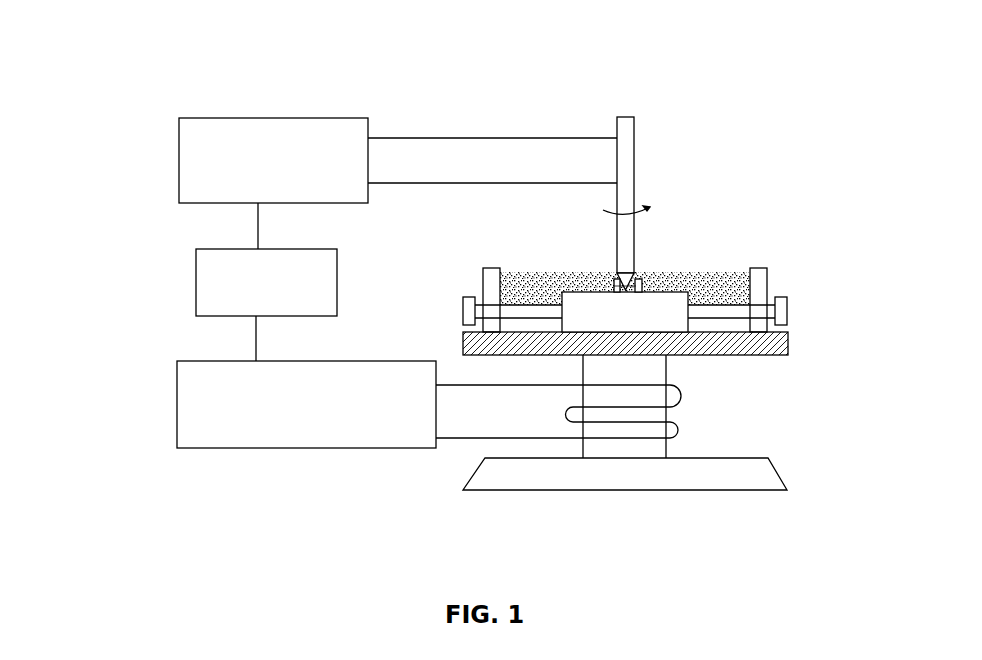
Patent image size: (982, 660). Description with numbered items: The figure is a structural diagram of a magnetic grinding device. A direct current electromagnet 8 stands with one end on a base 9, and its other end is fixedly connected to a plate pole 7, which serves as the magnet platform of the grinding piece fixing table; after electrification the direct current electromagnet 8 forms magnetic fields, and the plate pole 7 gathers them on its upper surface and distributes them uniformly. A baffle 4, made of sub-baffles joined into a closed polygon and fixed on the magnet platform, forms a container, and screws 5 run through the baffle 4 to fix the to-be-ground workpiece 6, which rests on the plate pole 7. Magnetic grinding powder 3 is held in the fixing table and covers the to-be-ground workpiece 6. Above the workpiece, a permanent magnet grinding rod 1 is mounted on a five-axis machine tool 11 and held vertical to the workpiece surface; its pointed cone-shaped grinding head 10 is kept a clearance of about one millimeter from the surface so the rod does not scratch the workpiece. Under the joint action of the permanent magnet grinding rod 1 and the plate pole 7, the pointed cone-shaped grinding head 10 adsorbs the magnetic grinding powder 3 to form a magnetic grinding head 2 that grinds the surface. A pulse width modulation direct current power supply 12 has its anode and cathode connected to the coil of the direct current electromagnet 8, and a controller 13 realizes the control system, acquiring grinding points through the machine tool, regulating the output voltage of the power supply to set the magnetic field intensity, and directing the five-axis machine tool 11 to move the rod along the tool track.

The permanent magnet grinding rod 1 is at (623, 148).
The magnetic grinding head 2 is at (628, 290).
The magnetic grinding powder 3 is at (739, 273).
The baffle 4 is at (760, 283).
The screws 5 is at (786, 313).
The to-be-ground workpiece 6 is at (678, 322).
The plate pole 7 is at (667, 350).
The direct current electromagnet 8 is at (653, 428).
The base 9 is at (547, 477).
The pointed cone-shaped grinding head 10 is at (620, 292).
The five-axis machine tool 11 is at (198, 135).
The pulse width modulation (PWM) direct current power supply 12 is at (192, 432).
The controller 13 is at (203, 263).